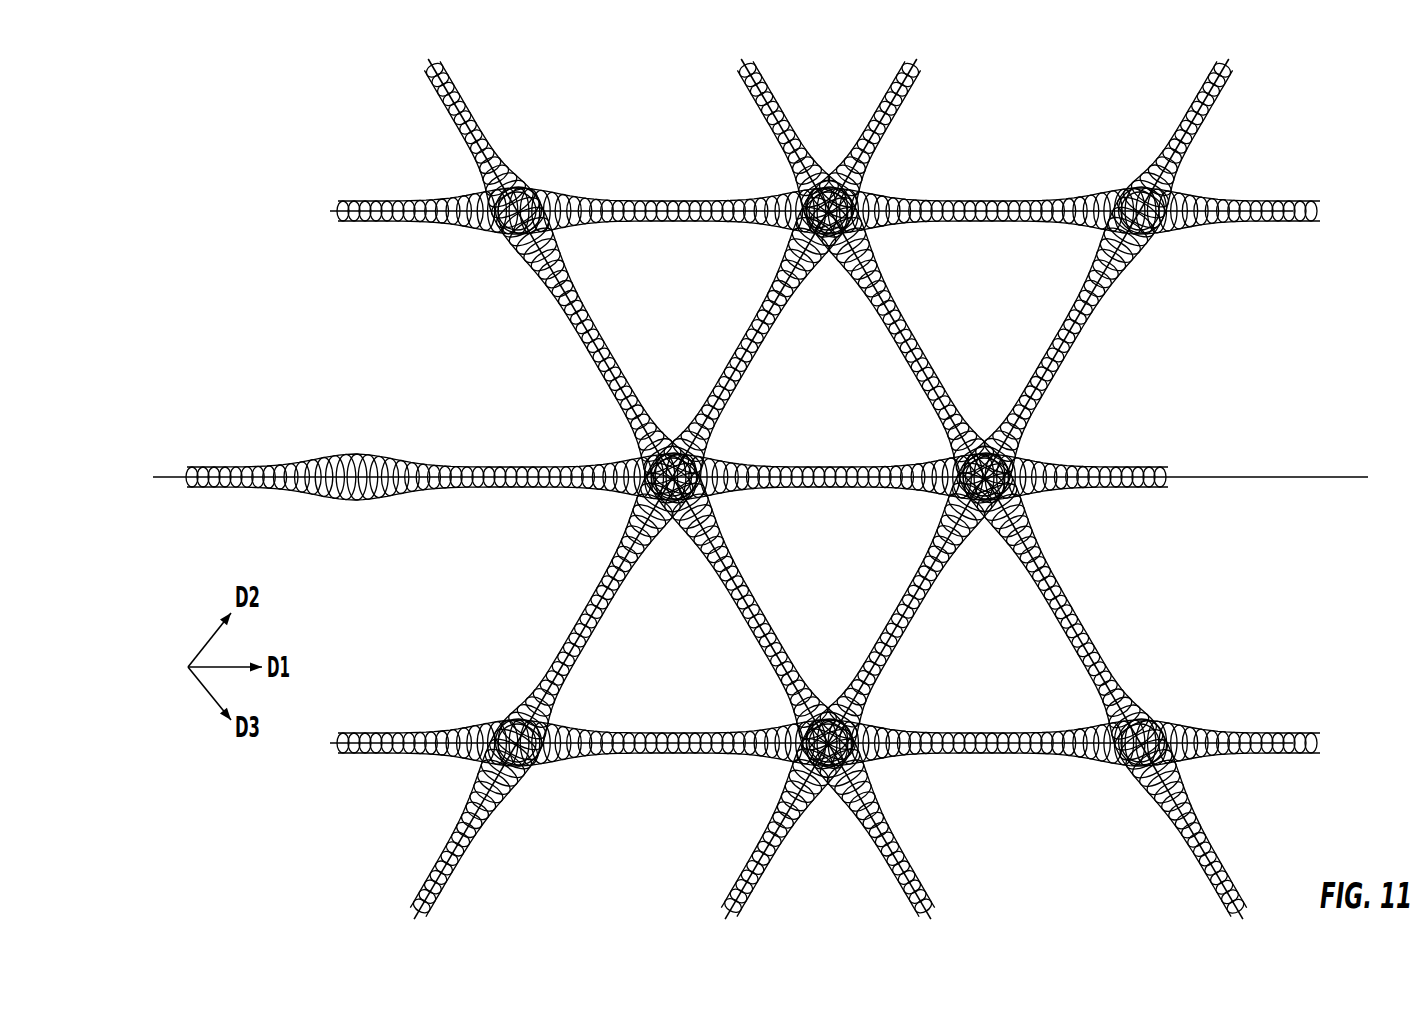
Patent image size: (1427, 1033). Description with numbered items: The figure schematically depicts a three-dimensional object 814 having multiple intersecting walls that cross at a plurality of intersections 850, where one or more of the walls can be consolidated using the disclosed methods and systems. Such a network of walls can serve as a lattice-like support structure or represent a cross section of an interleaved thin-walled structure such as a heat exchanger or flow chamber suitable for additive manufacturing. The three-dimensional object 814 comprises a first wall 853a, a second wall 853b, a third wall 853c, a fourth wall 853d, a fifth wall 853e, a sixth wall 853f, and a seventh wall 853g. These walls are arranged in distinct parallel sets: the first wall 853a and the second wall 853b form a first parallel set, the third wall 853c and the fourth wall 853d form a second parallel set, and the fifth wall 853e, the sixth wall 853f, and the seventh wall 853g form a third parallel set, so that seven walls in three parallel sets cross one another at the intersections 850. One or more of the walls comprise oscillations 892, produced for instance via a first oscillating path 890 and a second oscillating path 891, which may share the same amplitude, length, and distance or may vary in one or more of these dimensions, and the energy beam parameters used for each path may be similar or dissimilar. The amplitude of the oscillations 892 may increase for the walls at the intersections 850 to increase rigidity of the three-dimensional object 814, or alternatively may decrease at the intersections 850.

The three-dimensional object 814 is at (213, 100).
The intersection 850 is at (538, 180).
The first wall 853a is at (483, 100).
The second wall 853b is at (775, 90).
The third wall 853c is at (938, 79).
The fourth wall 853d is at (1236, 80).
The fifth wall 853e is at (1329, 200).
The sixth wall 853f is at (1181, 467).
The seventh wall 853g is at (1332, 735).
The first oscillating path 890 is at (538, 291).
The second oscillating path 891 is at (766, 360).
The oscillations 892 is at (606, 336).